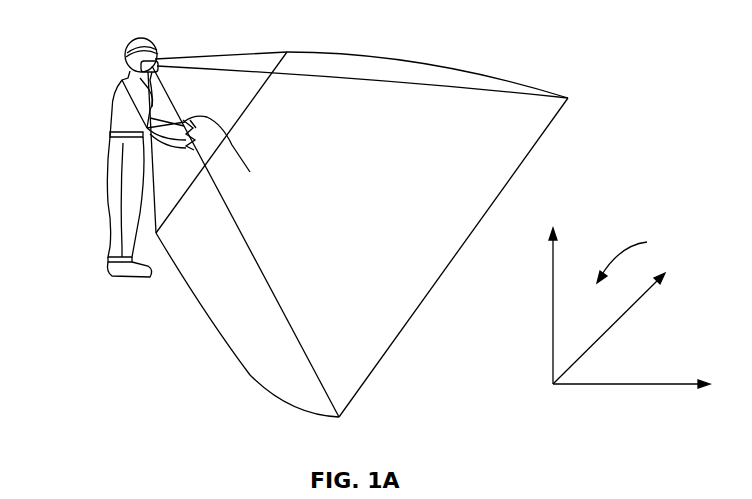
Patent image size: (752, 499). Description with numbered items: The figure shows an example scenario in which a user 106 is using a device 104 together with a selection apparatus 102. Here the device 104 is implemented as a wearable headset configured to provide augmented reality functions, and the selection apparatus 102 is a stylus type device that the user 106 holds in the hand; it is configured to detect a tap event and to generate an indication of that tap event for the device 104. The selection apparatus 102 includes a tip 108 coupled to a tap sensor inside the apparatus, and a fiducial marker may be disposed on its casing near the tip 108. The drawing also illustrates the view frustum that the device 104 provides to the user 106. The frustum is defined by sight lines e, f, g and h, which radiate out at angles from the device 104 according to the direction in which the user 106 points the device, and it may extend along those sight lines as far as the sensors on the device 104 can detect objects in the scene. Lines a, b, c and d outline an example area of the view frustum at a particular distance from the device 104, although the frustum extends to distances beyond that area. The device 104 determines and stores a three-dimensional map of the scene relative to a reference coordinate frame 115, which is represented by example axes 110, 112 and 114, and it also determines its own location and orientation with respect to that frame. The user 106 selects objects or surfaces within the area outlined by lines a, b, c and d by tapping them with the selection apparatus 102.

The selection apparatus 102 is at (190, 112).
The device 104 is at (128, 53).
The user 106 is at (110, 92).
The tip 108 is at (250, 172).
The axis 110 is at (550, 305).
The axis 112 is at (608, 333).
The axis 114 is at (632, 387).
The reference coordinate frame 115 is at (645, 259).
The line a is at (226, 343).
The line b is at (448, 268).
The line c is at (244, 110).
The line d is at (398, 62).
The sight line e is at (232, 55).
The sight line f is at (336, 77).
The sight line g is at (157, 198).
The sight line h is at (251, 257).